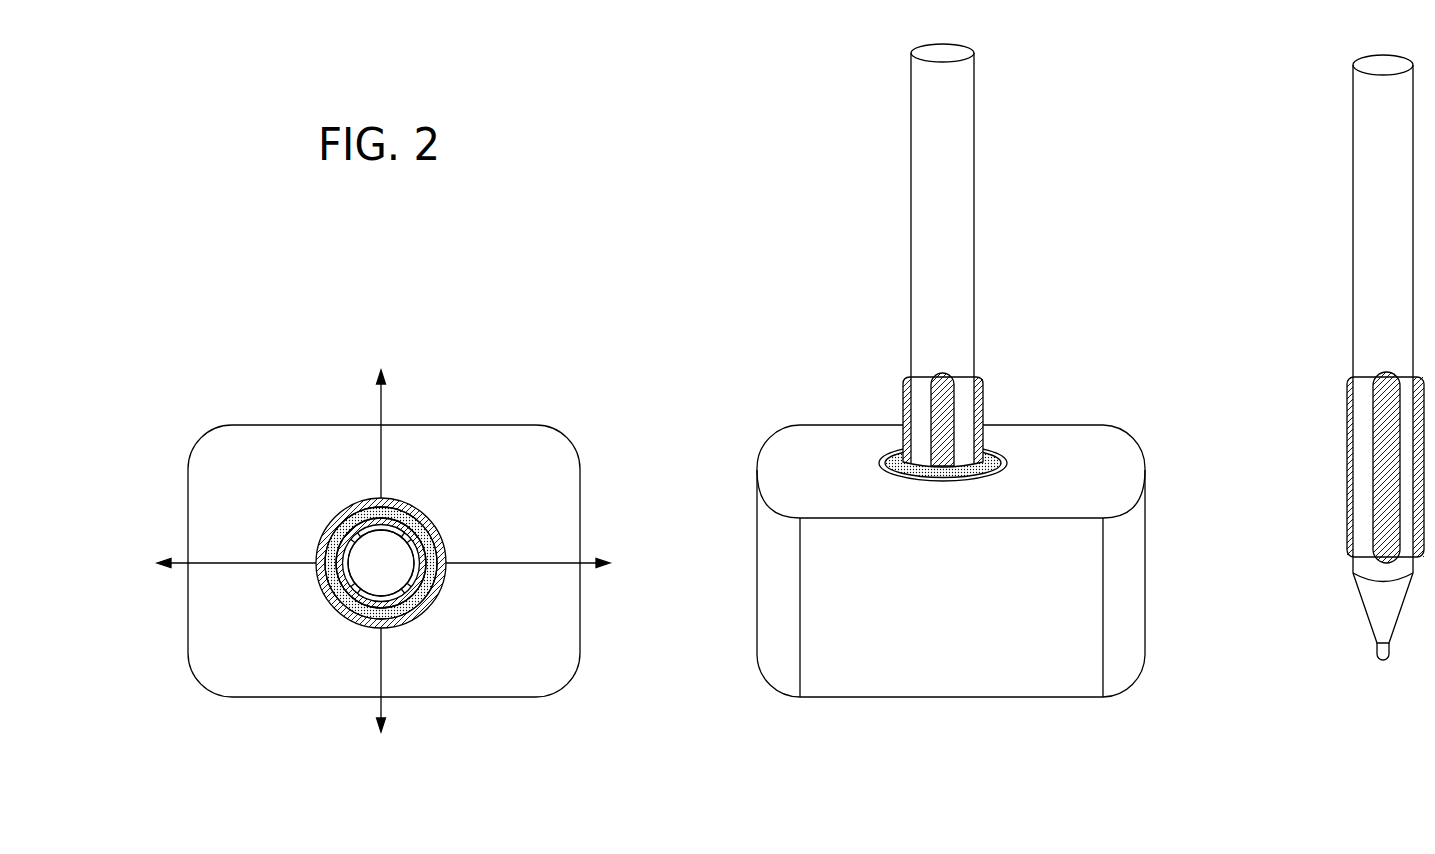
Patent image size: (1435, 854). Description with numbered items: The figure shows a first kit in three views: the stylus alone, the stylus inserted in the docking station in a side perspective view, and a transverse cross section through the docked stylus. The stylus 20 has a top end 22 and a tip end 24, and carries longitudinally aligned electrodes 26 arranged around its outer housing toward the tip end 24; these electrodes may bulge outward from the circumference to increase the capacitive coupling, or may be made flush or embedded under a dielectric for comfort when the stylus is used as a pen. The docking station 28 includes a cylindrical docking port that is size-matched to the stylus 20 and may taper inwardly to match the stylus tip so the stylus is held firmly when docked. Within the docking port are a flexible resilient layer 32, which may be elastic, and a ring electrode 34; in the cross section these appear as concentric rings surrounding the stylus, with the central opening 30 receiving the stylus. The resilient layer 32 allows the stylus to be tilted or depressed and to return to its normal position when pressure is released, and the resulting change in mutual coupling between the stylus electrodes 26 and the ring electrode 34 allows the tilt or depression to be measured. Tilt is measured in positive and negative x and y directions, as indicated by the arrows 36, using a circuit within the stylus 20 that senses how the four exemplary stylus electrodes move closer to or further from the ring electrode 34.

The stylus 20 is at (1018, 271).
The top end 22 is at (1288, 318).
The tip end 24 is at (1378, 660).
The longitudinally aligned electrodes 26 is at (348, 573).
The docking station 28 is at (432, 404).
The central opening 30 is at (381, 563).
The flexible resilient layer 32 is at (432, 548).
The ring electrode 34 is at (450, 585).
The arrows 36 is at (370, 380).